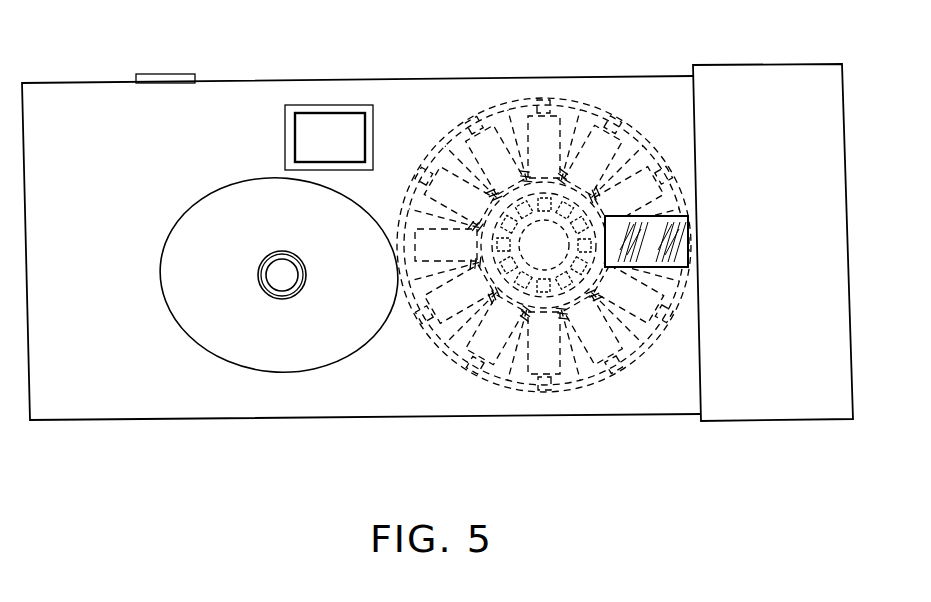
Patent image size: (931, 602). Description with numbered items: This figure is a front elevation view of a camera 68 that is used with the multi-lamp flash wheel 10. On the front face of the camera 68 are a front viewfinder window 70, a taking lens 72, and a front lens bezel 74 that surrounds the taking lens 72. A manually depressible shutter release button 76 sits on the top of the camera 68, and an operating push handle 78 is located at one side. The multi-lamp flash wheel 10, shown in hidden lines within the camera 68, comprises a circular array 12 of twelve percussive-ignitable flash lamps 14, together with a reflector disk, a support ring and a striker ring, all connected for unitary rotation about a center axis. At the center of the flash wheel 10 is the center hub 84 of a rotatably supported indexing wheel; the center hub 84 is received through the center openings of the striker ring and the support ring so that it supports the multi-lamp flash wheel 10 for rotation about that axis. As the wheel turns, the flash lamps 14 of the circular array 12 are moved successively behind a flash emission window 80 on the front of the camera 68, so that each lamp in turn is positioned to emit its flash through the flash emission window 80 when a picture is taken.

The multi-lamp flash wheel 10 is at (544, 280).
The circular array 12 is at (610, 364).
The flash lamps 14 is at (525, 388).
The camera 68 is at (117, 424).
The front viewfinder window 70 is at (303, 146).
The taking lens 72 is at (272, 268).
The front lens bezel 74 is at (210, 326).
The shutter release button 76 is at (166, 73).
The operating push handle 78 is at (812, 398).
The flash emission window 80 is at (684, 240).
The center hub 84 is at (565, 253).